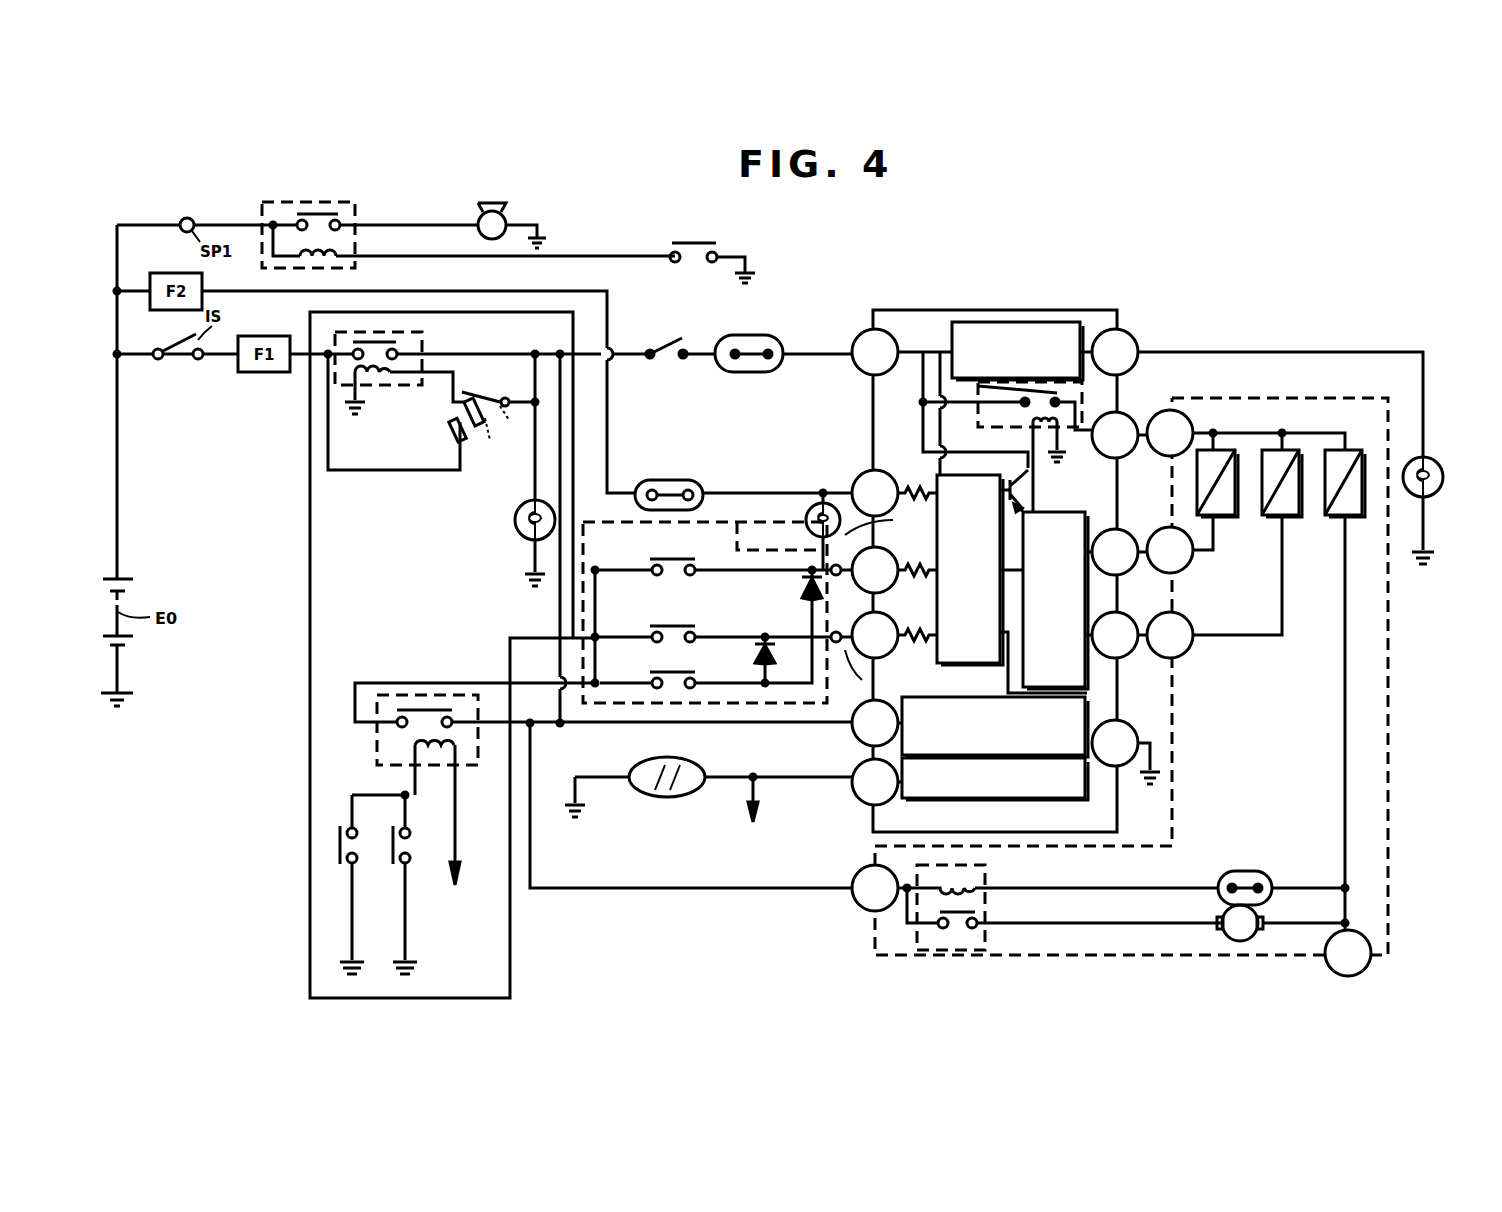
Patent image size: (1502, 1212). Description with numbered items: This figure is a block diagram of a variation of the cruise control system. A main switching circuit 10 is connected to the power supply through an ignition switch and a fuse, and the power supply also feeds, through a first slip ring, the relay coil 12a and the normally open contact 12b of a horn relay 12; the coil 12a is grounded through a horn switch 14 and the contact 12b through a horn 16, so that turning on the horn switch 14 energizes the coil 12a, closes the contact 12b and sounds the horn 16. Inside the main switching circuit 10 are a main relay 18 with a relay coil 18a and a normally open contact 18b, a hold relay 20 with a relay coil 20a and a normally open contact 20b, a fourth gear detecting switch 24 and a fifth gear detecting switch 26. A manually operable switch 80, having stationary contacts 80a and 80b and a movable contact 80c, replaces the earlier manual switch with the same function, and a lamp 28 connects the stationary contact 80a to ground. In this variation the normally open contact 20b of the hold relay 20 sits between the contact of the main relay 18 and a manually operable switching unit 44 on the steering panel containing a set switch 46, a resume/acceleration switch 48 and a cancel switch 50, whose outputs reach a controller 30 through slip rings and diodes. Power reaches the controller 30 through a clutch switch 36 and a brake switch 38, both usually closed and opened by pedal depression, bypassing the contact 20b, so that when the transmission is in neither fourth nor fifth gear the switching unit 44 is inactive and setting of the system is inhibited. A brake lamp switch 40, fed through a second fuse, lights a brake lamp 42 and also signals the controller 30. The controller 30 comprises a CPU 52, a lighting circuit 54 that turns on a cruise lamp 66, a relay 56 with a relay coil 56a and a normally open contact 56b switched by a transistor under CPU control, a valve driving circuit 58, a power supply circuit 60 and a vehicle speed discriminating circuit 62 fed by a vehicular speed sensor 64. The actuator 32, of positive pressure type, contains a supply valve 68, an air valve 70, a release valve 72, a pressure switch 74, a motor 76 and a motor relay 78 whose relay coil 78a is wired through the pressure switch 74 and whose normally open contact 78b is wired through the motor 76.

The main switching circuit 10 is at (310, 435).
The horn relay 12 is at (442, 221).
The relay coil 12a is at (335, 248).
The normally open contact 12b is at (340, 214).
The horn switch 14 is at (700, 243).
The horn 16 is at (508, 212).
The main relay 18 is at (365, 354).
The relay coil 18a is at (388, 376).
The normally open contact 18b is at (396, 344).
The hold relay 20 is at (585, 785).
The relay coil 20a is at (412, 768).
The normally open contact 20b is at (395, 715).
The fourth gear detecting switch 24 is at (338, 846).
The fifth gear detecting switch 26 is at (392, 848).
The lamp 28 is at (515, 520).
The controller 30 is at (880, 310).
The actuator 32 is at (1149, 694).
The clutch switch 36 is at (675, 342).
The brake switch 38 is at (765, 338).
The brake lamp switch 40 is at (655, 480).
The brake lamp 42 is at (805, 510).
The manually operable switching unit 44 is at (755, 635).
The set switch 46 is at (655, 559).
The resume/acceleration switch 48 is at (655, 626).
The cancel switch 50 is at (655, 672).
The CPU 52 is at (990, 663).
The lighting circuit 54 is at (1030, 322).
The relay 56 is at (985, 432).
The relay coil 56a is at (1033, 420).
The normally open contact 56b is at (978, 386).
The valve driving circuit 58 is at (1085, 512).
The power supply circuit 60 is at (912, 697).
The vehicle speed discriminating circuit 62 is at (940, 800).
The vehicular speed sensor 64 is at (700, 765).
The cruise lamp 66 is at (1438, 492).
The supply valve 68 is at (1222, 515).
The air valve 70 is at (1290, 515).
The release valve 72 is at (1352, 515).
The pressure switch 74 is at (1245, 870).
The motor 76 is at (1250, 940).
The motor relay 78 is at (1060, 906).
The relay coil 78a is at (965, 882).
The normally open contact 78b is at (975, 912).
The manually operable switch 80 is at (458, 429).
The stationary contact 80a is at (462, 403).
The stationary contact 80b is at (472, 425).
The movable contact 80c is at (480, 372).